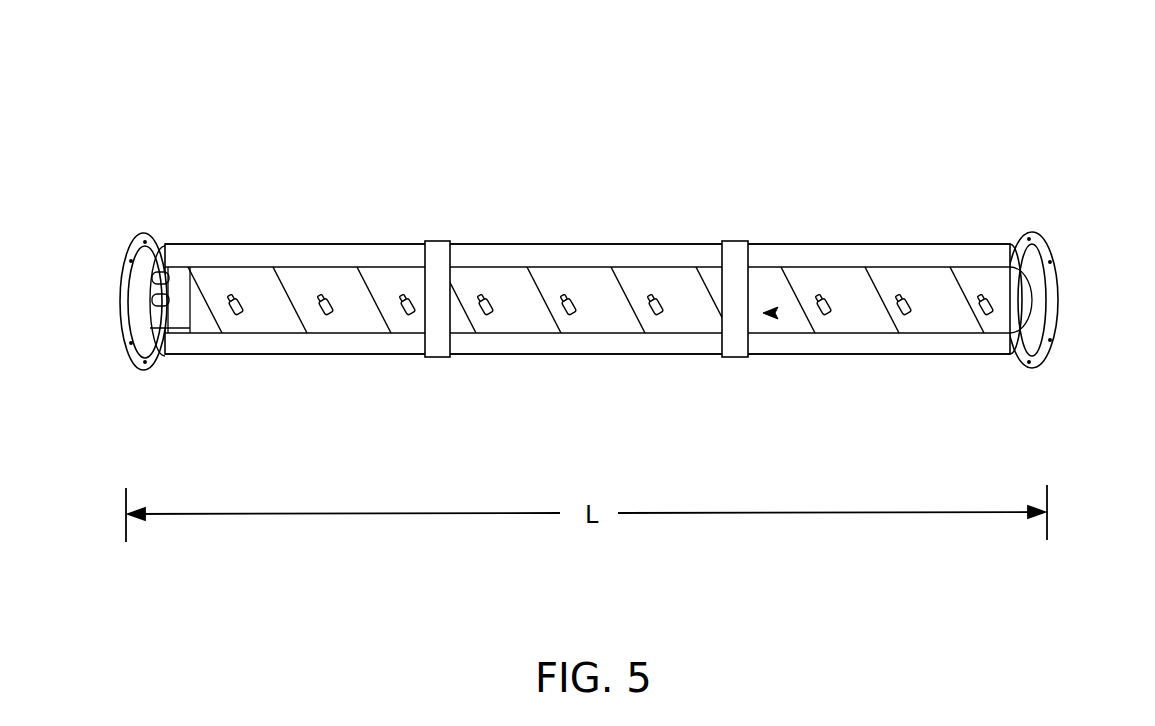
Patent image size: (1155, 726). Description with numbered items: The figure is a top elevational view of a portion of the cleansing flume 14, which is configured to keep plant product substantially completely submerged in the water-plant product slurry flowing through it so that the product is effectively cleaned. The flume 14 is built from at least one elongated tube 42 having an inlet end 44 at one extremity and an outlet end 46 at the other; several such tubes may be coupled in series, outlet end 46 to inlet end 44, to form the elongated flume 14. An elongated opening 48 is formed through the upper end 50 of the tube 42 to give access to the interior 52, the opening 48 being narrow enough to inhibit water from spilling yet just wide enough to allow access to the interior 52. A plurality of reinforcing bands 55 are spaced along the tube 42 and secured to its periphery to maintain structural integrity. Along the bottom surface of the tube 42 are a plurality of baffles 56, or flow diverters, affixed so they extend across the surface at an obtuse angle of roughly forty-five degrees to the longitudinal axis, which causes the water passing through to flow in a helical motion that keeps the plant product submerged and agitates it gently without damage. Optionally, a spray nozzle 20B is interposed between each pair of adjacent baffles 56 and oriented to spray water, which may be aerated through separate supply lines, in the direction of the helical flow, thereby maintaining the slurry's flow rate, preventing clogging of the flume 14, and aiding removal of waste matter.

The cleansing flume 14 is at (672, 97).
The spray nozzle 20B is at (323, 294).
The tube 42 is at (385, 348).
The inlet end 44 is at (121, 306).
The outlet end 46 is at (1057, 302).
The elongated opening 48 is at (612, 326).
The upper end 50 is at (504, 253).
The interior 52 is at (775, 313).
The reinforcing bands 55 is at (436, 258).
The baffles 56 is at (983, 302).